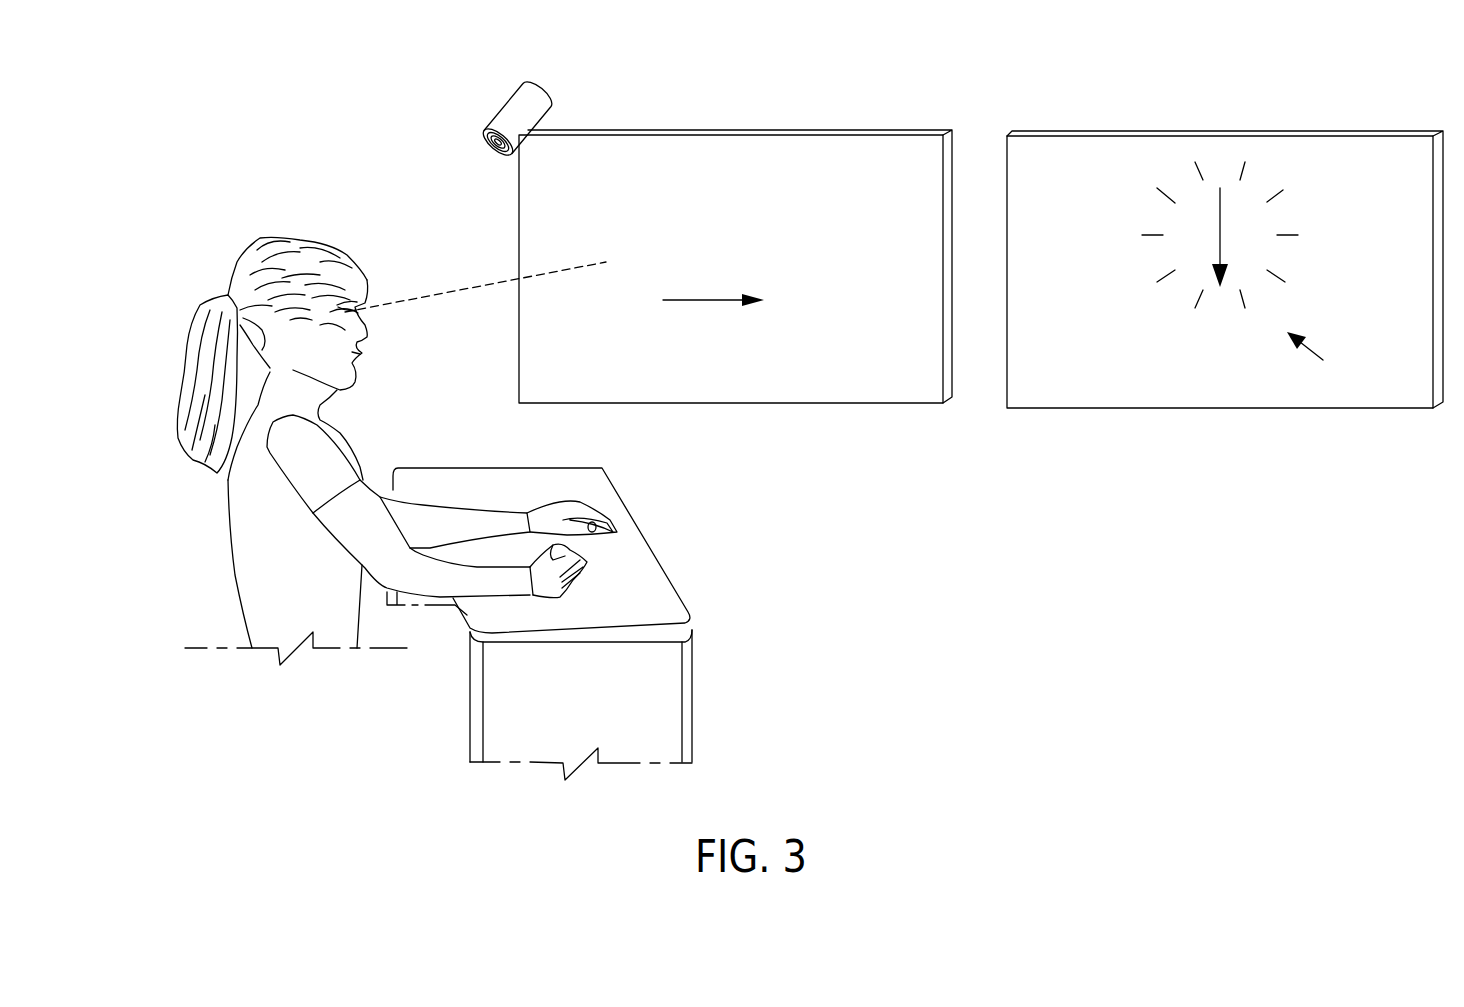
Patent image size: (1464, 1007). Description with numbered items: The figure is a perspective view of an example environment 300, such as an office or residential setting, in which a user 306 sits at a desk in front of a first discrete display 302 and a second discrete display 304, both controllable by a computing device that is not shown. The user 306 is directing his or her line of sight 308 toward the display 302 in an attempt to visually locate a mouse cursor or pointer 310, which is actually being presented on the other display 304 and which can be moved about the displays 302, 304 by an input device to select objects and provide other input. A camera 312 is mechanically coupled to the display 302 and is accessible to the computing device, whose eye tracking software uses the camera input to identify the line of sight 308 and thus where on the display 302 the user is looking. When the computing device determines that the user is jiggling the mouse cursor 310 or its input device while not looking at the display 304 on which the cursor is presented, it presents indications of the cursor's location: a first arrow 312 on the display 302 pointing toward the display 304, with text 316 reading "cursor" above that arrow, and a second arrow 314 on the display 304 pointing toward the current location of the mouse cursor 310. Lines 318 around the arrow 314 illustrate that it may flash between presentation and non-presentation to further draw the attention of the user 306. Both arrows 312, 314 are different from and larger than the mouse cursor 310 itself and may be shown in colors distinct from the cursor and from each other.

The environment 300 is at (156, 140).
The first discrete display 302 is at (756, 145).
The second discrete display 304 is at (1245, 148).
The user 306 is at (233, 545).
The line of sight 308 is at (450, 295).
The mouse cursor or pointer 310 is at (1316, 350).
The camera / first arrow 312 is at (535, 80).
The second arrow 314 is at (1218, 228).
The text 316 is at (814, 272).
The lines 318 is at (1273, 196).